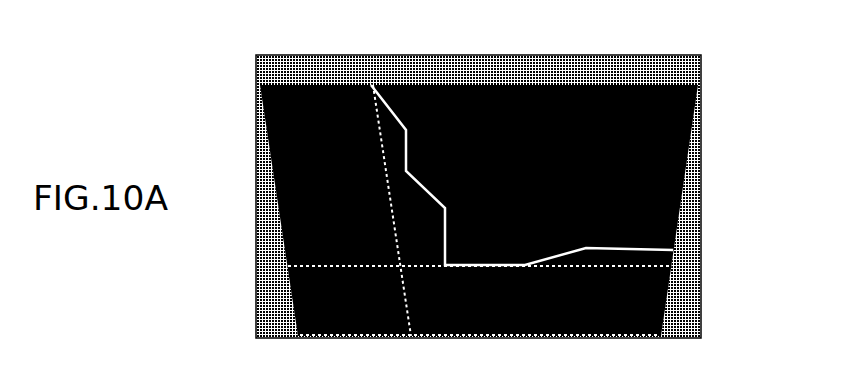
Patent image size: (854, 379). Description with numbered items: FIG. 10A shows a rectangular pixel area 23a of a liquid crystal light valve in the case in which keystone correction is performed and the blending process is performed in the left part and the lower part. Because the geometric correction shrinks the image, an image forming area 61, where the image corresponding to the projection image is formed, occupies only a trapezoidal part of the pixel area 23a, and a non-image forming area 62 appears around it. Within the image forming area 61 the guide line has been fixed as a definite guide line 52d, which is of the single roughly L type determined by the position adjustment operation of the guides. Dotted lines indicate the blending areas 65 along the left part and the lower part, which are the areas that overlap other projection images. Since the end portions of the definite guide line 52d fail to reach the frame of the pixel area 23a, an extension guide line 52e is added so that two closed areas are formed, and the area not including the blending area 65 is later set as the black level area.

The pixel area 23a is at (693, 153).
The non-image forming area 62 is at (323, 47).
The image forming area 61 is at (475, 300).
The blending area 65 is at (244, 168).
The definite guide line 52d is at (388, 102).
The extension guide line 52e is at (428, 378).